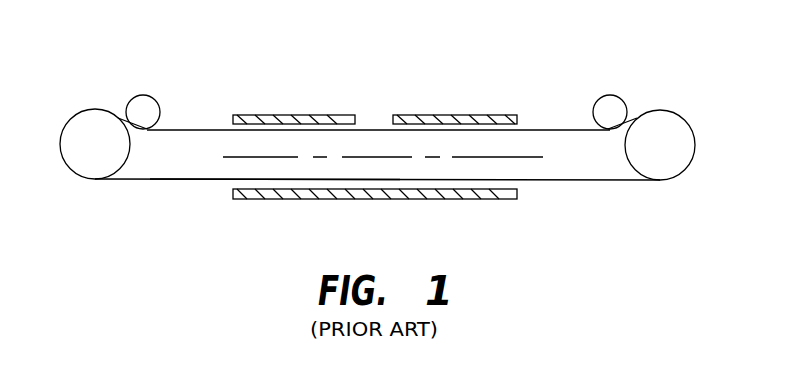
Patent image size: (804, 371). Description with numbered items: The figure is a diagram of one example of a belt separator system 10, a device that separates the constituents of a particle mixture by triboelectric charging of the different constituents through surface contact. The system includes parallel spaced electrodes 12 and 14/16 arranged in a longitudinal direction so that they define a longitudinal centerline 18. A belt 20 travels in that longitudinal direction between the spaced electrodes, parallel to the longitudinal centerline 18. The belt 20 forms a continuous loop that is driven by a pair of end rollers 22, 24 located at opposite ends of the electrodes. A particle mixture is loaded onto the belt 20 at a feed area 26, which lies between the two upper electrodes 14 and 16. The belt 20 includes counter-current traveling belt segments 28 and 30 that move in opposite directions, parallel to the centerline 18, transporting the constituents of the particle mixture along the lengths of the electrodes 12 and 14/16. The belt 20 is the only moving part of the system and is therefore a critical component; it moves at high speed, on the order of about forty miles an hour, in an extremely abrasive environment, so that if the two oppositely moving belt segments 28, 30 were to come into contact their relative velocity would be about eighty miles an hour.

The belt separator system 10 is at (577, 60).
The electrode 12 is at (440, 199).
The electrode 14 is at (460, 115).
The electrode 16 is at (315, 114).
The longitudinal centerline 18 is at (223, 158).
The belt 20 is at (572, 182).
The end roller 22 is at (677, 111).
The end roller 24 is at (83, 108).
The feed area 26 is at (373, 118).
The counter-current traveling belt segment 28 is at (182, 180).
The counter-current traveling belt segment 30 is at (215, 130).